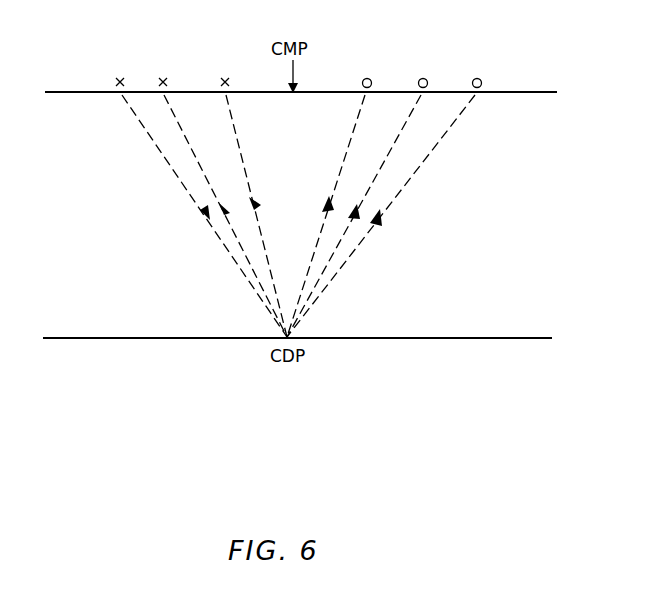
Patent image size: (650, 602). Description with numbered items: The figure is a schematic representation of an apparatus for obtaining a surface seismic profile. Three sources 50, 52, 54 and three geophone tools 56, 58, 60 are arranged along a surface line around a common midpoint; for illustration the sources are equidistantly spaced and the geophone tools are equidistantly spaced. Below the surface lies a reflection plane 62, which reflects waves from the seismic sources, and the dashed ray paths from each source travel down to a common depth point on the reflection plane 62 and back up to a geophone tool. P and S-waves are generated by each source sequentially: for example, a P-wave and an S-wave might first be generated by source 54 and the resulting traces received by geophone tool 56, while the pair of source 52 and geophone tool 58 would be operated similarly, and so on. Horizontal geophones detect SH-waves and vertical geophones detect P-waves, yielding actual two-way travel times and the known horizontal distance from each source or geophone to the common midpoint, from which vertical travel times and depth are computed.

The source 50 is at (118, 78).
The source 52 is at (162, 78).
The source 54 is at (224, 78).
The geophone tool 56 is at (370, 78).
The geophone tool 58 is at (426, 78).
The geophone tool 60 is at (480, 78).
The reflection plane 62 is at (433, 337).